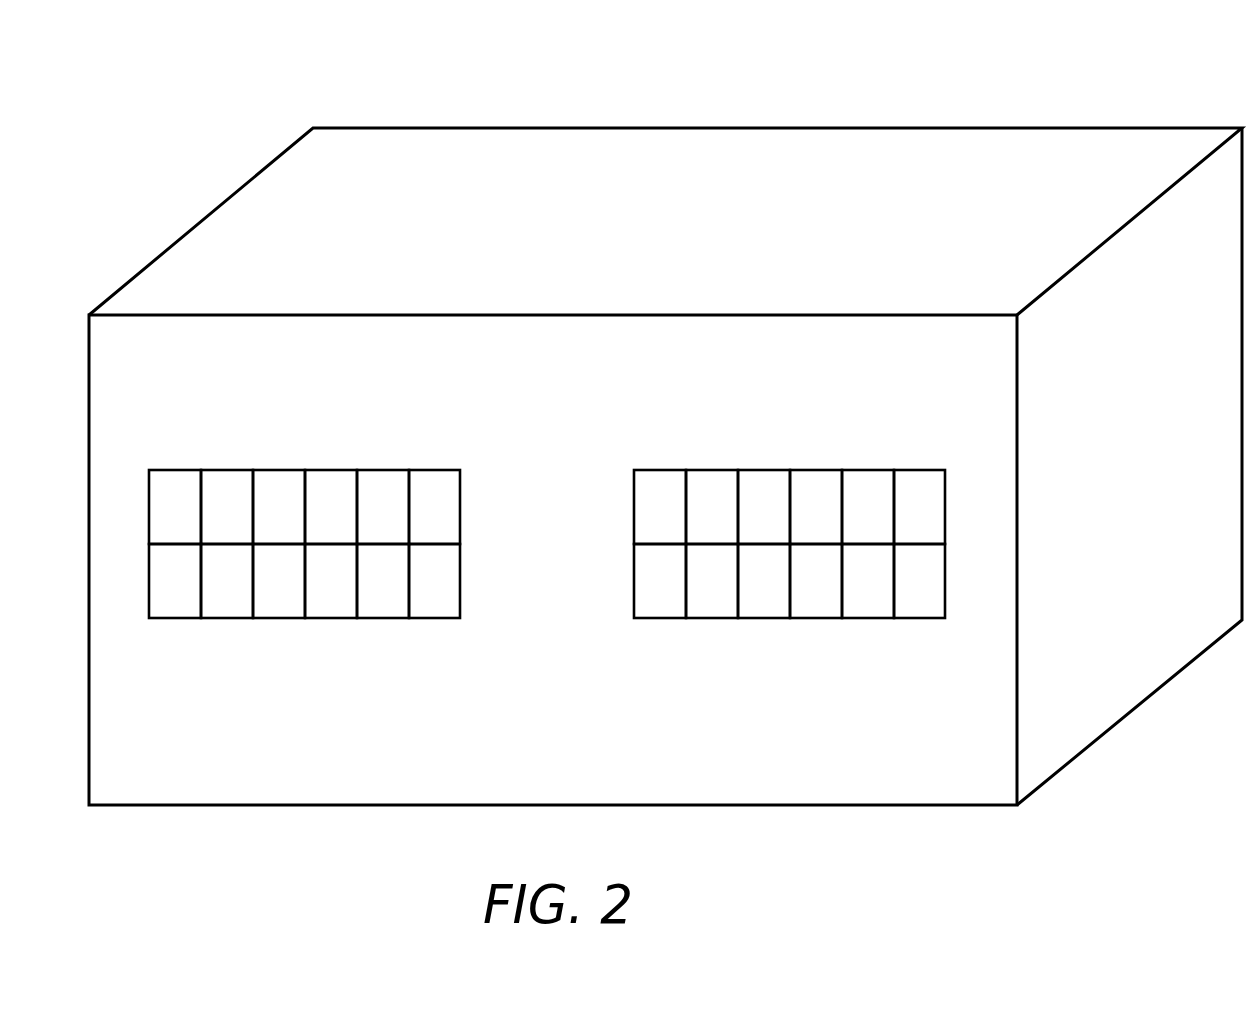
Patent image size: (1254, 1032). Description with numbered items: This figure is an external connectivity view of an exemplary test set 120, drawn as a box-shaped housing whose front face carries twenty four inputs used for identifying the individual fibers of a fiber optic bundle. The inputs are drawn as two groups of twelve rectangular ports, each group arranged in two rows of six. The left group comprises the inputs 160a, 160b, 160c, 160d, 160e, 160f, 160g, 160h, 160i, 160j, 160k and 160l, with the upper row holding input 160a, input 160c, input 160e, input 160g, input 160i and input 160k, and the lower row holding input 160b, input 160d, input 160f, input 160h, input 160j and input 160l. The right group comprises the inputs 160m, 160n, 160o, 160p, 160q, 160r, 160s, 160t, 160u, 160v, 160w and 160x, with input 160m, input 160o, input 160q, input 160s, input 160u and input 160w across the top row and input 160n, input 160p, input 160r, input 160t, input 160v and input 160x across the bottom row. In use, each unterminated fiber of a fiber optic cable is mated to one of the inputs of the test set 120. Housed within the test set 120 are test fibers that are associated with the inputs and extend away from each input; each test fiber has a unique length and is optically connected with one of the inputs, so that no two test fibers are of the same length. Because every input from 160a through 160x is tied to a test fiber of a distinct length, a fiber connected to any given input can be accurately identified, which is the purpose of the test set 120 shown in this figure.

The test set 120 is at (907, 160).
The input 160a is at (175, 487).
The input 160b is at (170, 595).
The input 160c is at (228, 487).
The input 160d is at (222, 595).
The input 160e is at (278, 487).
The input 160f is at (272, 595).
The input 160g is at (330, 487).
The input 160h is at (325, 595).
The input 160i is at (382, 487).
The input 160j is at (378, 595).
The input 160k is at (435, 487).
The input 160l is at (430, 595).
The input 160m is at (659, 487).
The input 160n is at (655, 595).
The input 160o is at (713, 487).
The input 160p is at (707, 595).
The input 160q is at (763, 487).
The input 160r is at (757, 595).
The input 160s is at (815, 487).
The input 160t is at (810, 595).
The input 160u is at (867, 487).
The input 160v is at (863, 595).
The input 160w is at (920, 487).
The input 160x is at (915, 595).